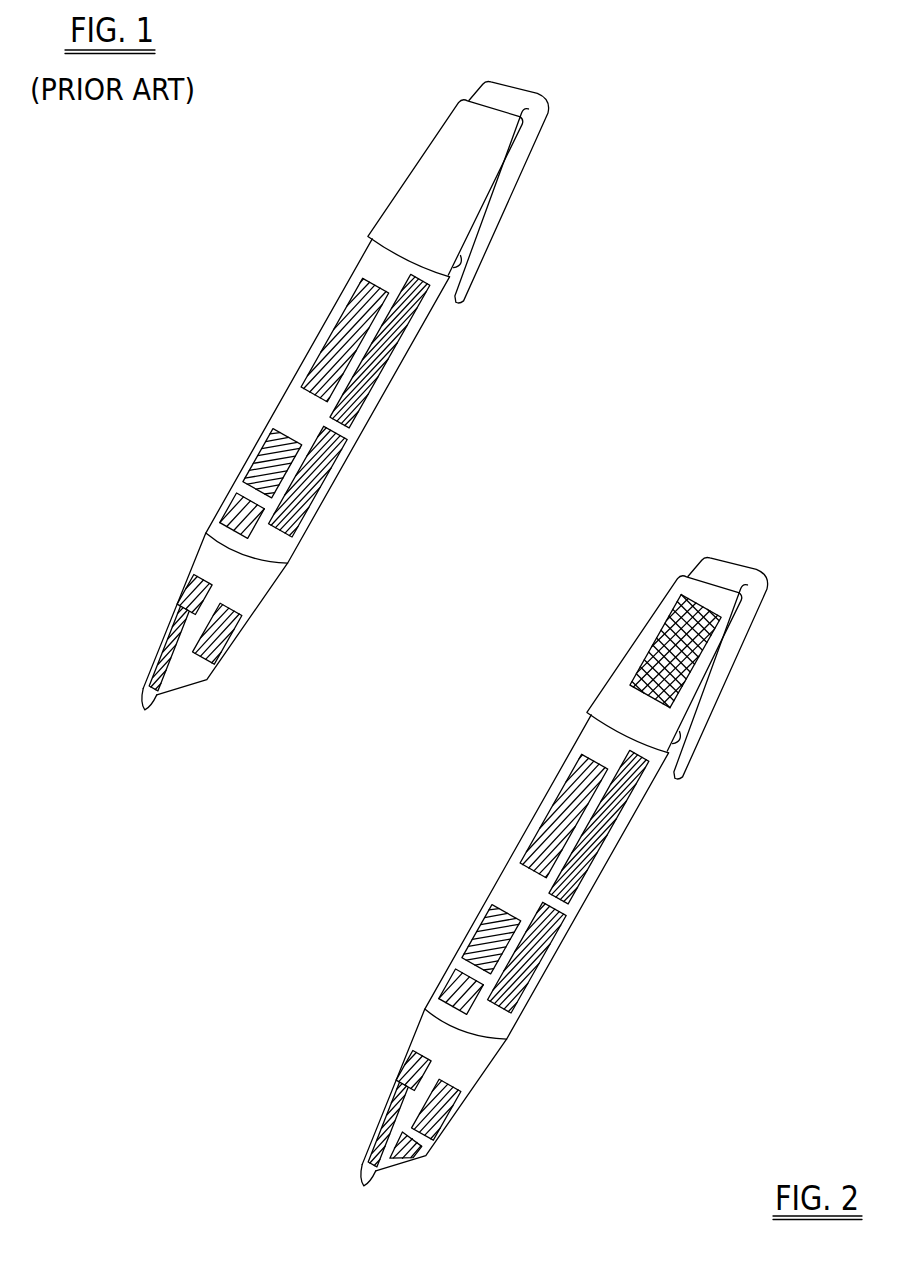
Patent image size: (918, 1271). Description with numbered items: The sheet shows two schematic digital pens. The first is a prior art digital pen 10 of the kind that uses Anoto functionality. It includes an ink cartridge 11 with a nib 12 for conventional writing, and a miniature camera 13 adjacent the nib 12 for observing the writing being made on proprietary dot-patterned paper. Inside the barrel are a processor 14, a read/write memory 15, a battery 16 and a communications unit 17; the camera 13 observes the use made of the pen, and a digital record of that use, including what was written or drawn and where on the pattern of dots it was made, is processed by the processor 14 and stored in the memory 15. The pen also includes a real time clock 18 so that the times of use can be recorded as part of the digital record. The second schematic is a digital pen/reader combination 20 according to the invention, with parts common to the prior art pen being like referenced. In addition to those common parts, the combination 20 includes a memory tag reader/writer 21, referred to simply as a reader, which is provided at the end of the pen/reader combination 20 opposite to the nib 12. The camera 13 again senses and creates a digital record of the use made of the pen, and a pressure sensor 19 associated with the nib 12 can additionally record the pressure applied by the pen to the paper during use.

In FIG. 1, the prior art digital pen 10 is at (526, 227).
In FIG. 1, the ink cartridge 11 is at (185, 582).
In FIG. 2, the ink cartridge 11 is at (410, 1058).
In FIG. 1, the nib 12 is at (157, 700).
In FIG. 2, the nib 12 is at (360, 1177).
In FIG. 1, the miniature camera 13 is at (226, 637).
In FIG. 2, the miniature camera 13 is at (450, 1108).
In FIG. 1, the processor 14 is at (300, 503).
In FIG. 2, the processor 14 is at (527, 967).
In FIG. 1, the read/write memory 15 is at (382, 362).
In FIG. 2, the read/write memory 15 is at (597, 850).
In FIG. 1, the battery 16 is at (338, 325).
In FIG. 2, the battery 16 is at (557, 808).
In FIG. 1, the communications unit 17 is at (267, 457).
In FIG. 2, the communications unit 17 is at (485, 938).
In FIG. 1, the real time clock 18 is at (228, 517).
In FIG. 2, the real time clock 18 is at (442, 993).
In FIG. 2, the pressure sensor 19 is at (425, 1153).
In FIG. 2, the digital pen/reader combination 20 is at (735, 729).
In FIG. 2, the memory tag reader/writer 21 is at (662, 637).